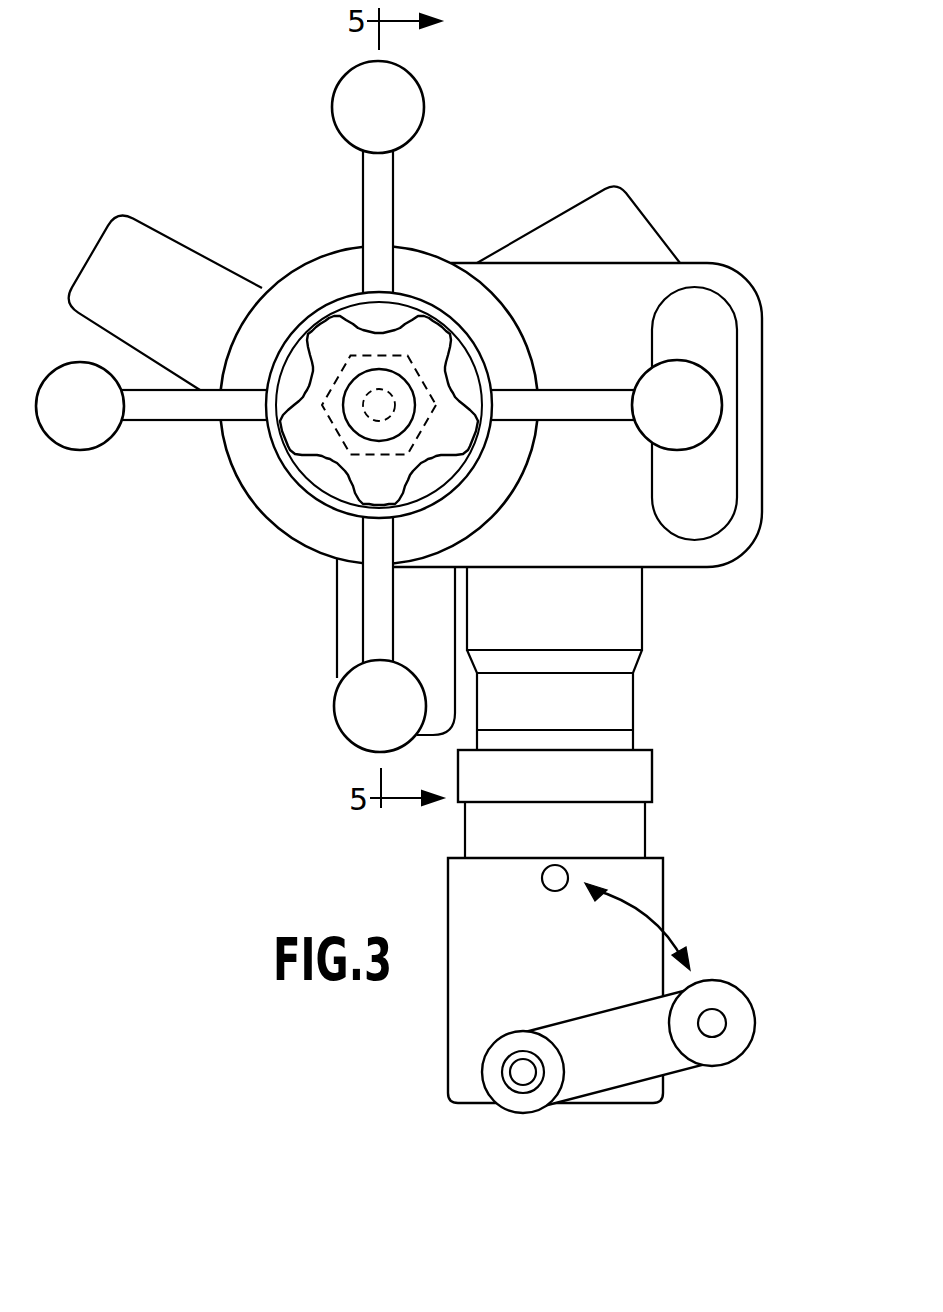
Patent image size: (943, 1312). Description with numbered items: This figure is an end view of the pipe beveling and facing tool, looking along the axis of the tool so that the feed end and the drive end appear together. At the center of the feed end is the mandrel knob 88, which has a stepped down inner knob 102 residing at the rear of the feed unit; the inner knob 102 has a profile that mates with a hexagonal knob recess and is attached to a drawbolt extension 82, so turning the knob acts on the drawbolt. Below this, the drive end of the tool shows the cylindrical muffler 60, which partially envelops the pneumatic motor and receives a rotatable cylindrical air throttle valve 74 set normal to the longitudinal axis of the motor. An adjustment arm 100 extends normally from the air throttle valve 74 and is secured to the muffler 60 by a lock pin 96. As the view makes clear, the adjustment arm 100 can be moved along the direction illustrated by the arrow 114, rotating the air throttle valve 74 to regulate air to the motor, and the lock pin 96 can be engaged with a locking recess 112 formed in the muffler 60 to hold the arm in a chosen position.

The muffler 60 is at (663, 880).
The air throttle valve 74 is at (523, 1105).
The drawbolt extension 82 is at (397, 402).
The mandrel knob 88 is at (427, 337).
The lock pin 96 is at (727, 1020).
The adjustment arm 100 is at (622, 1065).
The inner knob 102 is at (427, 427).
The locking recess 112 is at (555, 893).
The arrow 114 is at (677, 940).